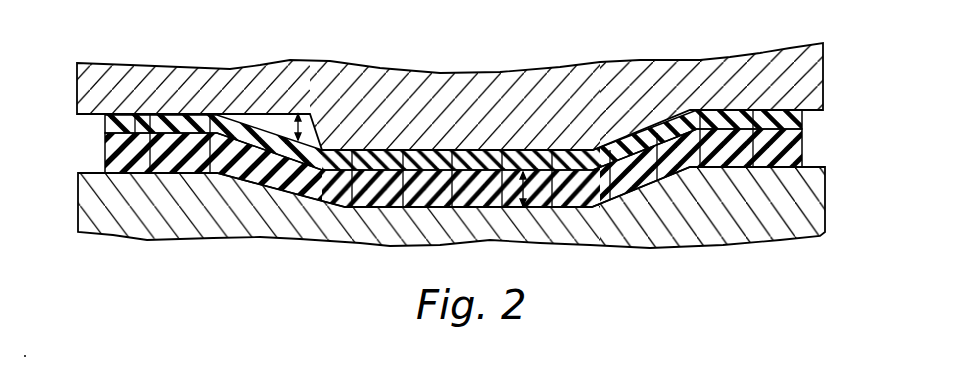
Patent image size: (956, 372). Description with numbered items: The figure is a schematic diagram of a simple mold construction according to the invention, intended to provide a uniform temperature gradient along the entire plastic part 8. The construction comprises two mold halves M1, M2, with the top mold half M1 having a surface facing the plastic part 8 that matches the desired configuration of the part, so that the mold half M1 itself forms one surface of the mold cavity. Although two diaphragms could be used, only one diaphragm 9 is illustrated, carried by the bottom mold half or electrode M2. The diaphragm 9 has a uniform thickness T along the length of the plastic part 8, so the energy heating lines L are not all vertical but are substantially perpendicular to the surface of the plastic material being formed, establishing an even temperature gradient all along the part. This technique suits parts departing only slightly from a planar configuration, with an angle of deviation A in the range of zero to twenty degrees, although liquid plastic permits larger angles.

The top mold half M1 is at (808, 75).
The bottom mold half or electrode M2 is at (813, 198).
The plastic part 8 is at (763, 113).
The diaphragm 9 is at (803, 143).
The angle of deviation A is at (313, 130).
The thickness of the diaphragm T is at (524, 186).
The energy heating lines L is at (712, 167).